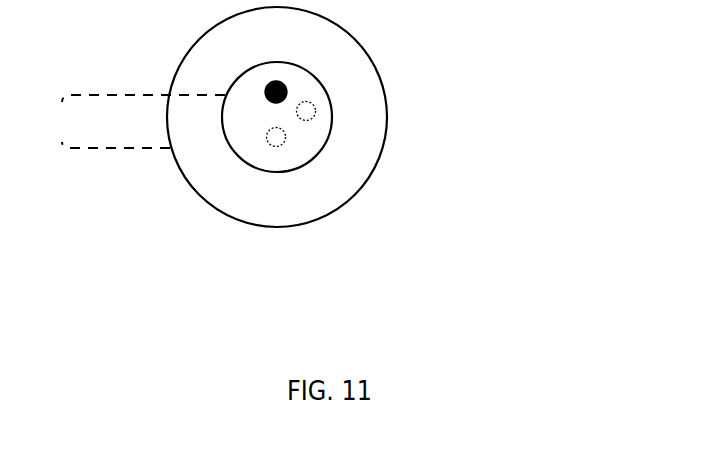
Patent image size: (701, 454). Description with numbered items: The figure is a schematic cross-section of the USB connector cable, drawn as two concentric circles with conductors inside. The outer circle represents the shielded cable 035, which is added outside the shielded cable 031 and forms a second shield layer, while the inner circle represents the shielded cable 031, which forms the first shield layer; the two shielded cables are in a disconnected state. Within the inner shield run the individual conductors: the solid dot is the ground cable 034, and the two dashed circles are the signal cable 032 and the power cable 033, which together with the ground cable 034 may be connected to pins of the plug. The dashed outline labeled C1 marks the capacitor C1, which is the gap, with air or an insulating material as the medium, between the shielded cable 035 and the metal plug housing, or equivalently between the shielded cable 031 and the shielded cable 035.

The shielded cable 035 is at (377, 72).
The shielded cable 031 is at (310, 160).
The ground cable 034 is at (276, 92).
The power cable 033 is at (276, 146).
The signal cable 032 is at (314, 113).
The capacitor C1 is at (137, 121).